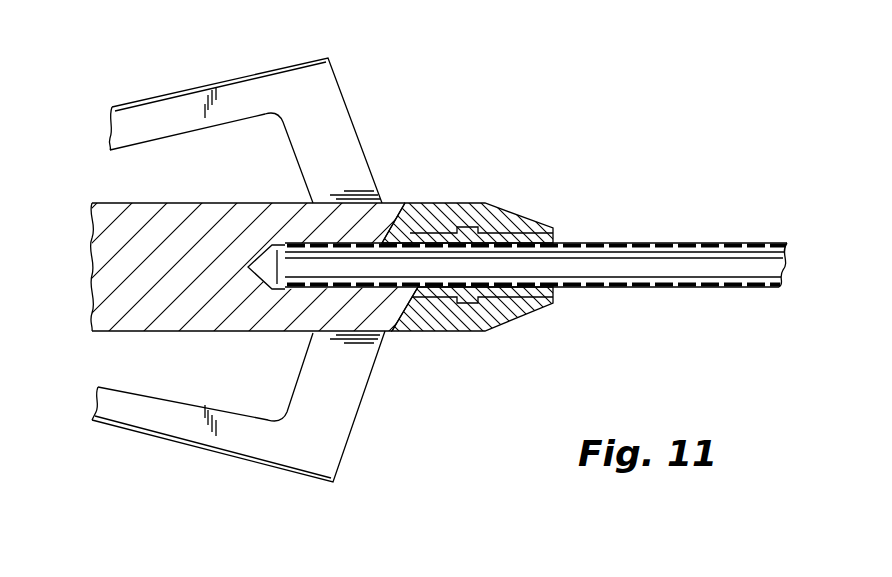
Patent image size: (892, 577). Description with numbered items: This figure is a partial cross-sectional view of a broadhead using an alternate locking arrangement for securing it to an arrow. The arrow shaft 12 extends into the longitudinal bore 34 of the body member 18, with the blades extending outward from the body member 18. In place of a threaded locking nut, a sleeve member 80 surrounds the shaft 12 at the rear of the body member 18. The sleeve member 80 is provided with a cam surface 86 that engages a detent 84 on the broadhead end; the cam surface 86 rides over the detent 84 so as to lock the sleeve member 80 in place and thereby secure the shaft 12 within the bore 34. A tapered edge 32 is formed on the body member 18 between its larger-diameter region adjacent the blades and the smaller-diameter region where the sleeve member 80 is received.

The shaft 12 is at (703, 243).
The body member 18 is at (158, 332).
The tapered edge 32 is at (405, 203).
The longitudinal bore 34 is at (265, 246).
The sleeve member 80 is at (535, 312).
The detent 84 is at (466, 331).
The cam surface 86 is at (487, 205).